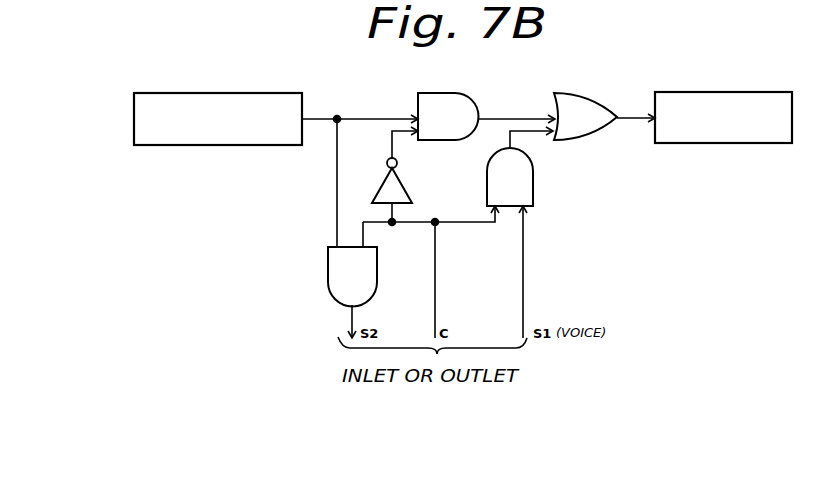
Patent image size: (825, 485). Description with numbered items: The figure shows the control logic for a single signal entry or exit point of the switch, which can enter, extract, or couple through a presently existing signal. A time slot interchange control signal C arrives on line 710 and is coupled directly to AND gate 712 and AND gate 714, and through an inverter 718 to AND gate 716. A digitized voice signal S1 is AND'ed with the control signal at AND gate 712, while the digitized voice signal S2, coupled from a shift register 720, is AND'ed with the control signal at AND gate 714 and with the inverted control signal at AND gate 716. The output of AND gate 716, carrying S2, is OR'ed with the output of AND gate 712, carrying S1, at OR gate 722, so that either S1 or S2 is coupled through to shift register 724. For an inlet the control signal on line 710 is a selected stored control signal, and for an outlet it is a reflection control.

The shift register 720 is at (228, 93).
The AND gate 716 is at (433, 93).
The OR gate 722 is at (580, 93).
The shift register 724 is at (718, 92).
The inverter 718 is at (408, 185).
The AND gate 712 is at (533, 180).
The AND gate 714 is at (328, 271).
The line 710 is at (436, 267).